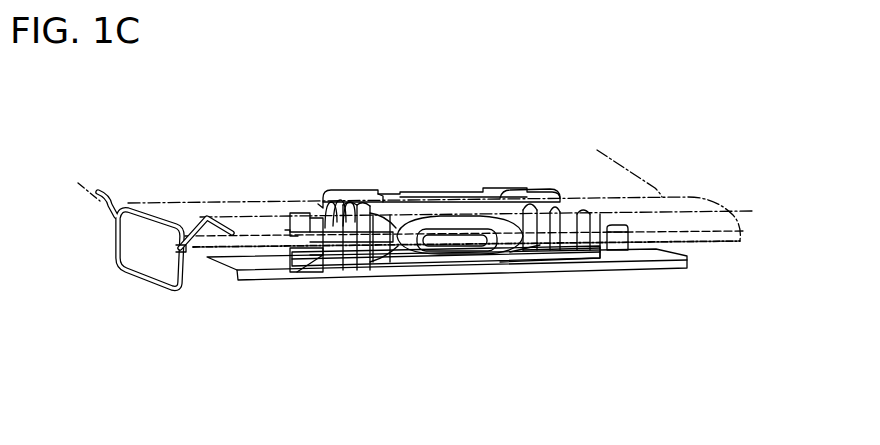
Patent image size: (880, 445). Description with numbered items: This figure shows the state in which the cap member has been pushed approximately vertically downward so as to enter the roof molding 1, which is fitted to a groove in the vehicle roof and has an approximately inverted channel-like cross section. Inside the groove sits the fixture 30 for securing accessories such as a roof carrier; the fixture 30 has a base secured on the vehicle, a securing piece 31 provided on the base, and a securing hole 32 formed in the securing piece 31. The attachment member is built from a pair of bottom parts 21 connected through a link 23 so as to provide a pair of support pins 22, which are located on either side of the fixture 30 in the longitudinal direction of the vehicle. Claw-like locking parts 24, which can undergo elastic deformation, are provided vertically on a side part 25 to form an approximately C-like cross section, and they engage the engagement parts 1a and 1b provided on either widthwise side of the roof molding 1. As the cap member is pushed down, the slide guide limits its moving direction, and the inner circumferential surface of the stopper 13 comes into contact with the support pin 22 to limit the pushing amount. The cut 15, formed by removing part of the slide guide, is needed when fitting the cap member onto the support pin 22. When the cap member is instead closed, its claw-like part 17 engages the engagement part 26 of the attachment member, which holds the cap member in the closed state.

The roof molding 1 is at (150, 205).
The engagement part 1a is at (118, 267).
The engagement part 1b is at (170, 260).
The stopper 13 is at (353, 195).
The cut 15 is at (318, 204).
The claw-like part 17 is at (383, 195).
The bottom part 21 is at (385, 262).
The support pin 22 is at (332, 200).
The link 23 is at (495, 262).
The locking part 24 is at (280, 222).
The side part 25 is at (321, 262).
The engagement part 26 is at (418, 195).
The fixture 30 is at (290, 283).
The securing piece 31 is at (463, 212).
The securing hole 32 is at (454, 246).